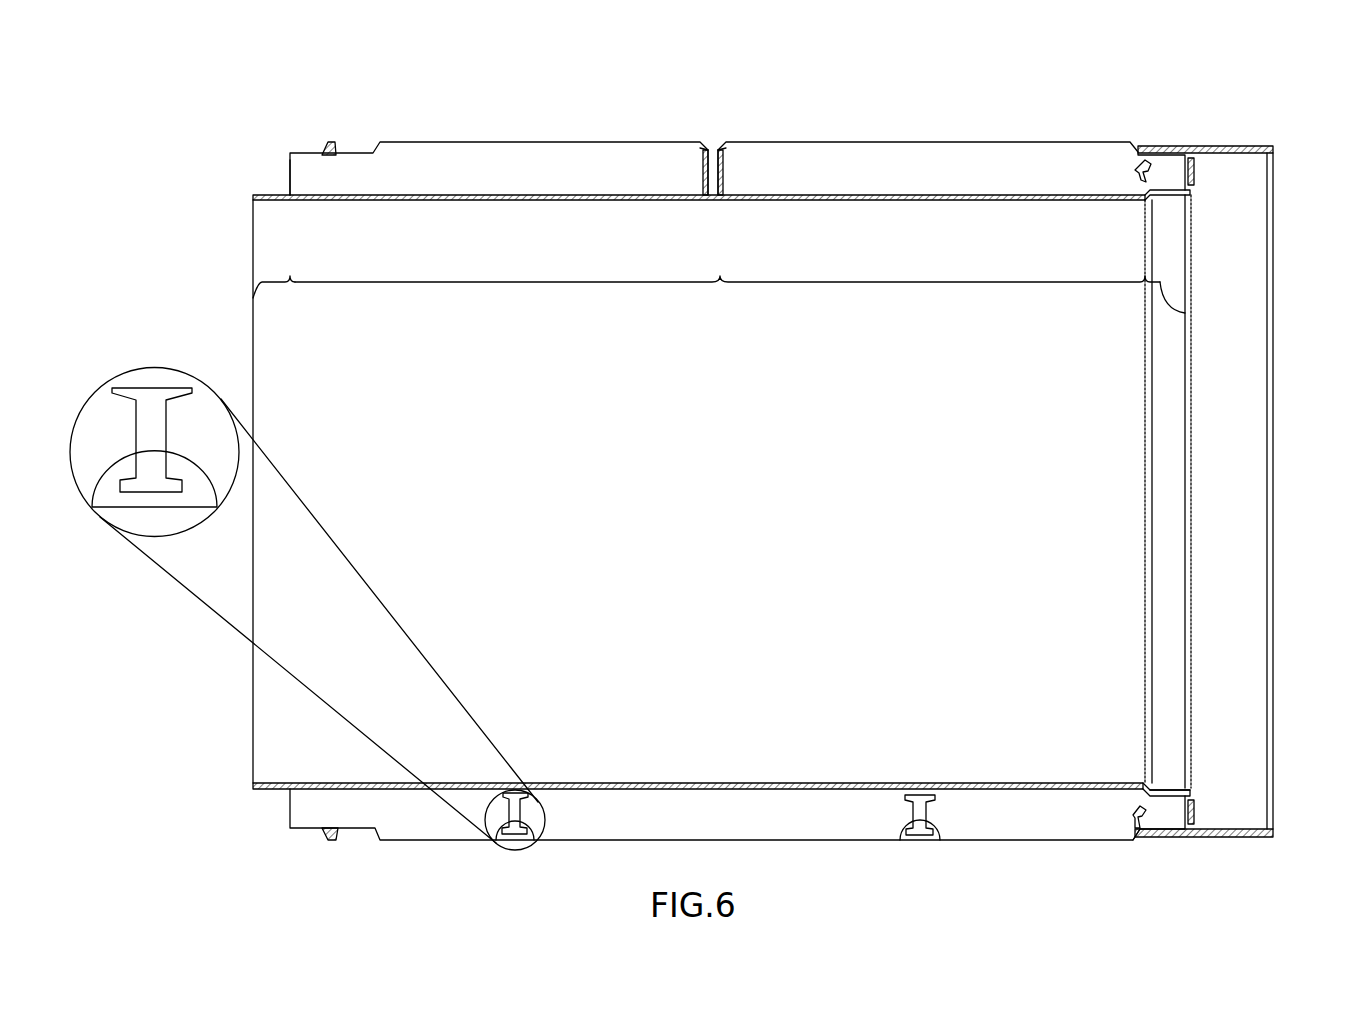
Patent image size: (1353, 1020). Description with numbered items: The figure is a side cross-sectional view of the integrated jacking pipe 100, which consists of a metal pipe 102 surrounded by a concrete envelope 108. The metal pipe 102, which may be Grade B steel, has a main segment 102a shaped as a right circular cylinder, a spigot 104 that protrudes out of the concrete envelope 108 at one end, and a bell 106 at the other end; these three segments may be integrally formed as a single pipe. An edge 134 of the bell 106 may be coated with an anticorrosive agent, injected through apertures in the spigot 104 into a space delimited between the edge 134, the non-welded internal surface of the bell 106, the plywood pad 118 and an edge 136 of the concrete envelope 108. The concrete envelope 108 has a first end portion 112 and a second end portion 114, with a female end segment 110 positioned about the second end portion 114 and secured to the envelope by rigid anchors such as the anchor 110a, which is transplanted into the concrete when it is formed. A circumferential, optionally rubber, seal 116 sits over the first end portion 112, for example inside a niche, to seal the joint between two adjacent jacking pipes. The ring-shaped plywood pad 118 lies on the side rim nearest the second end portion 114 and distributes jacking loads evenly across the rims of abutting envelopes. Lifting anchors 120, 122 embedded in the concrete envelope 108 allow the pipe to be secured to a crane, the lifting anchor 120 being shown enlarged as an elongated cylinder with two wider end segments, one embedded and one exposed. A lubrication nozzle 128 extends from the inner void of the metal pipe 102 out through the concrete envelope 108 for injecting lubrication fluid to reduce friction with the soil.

The integrated jacking pipe 100 is at (836, 98).
The metal pipe 102 is at (347, 783).
The main segment 102a is at (727, 298).
The spigot 104 is at (253, 298).
The bell 106 is at (1185, 313).
The concrete envelope 108 is at (1033, 150).
The female end segment 110 is at (1223, 146).
The anchor 110a is at (1127, 178).
The first end portion 112 is at (380, 850).
The second end portion 114 is at (1188, 848).
The circumferential seal 116 is at (328, 143).
The plywood pad 118 is at (1193, 813).
The lifting anchor 120 is at (514, 846).
The lifting anchor 122 is at (928, 842).
The lubrication nozzle 128 is at (712, 134).
The edge of bell 134 is at (1198, 193).
The edge of concrete envelope 136 is at (285, 178).